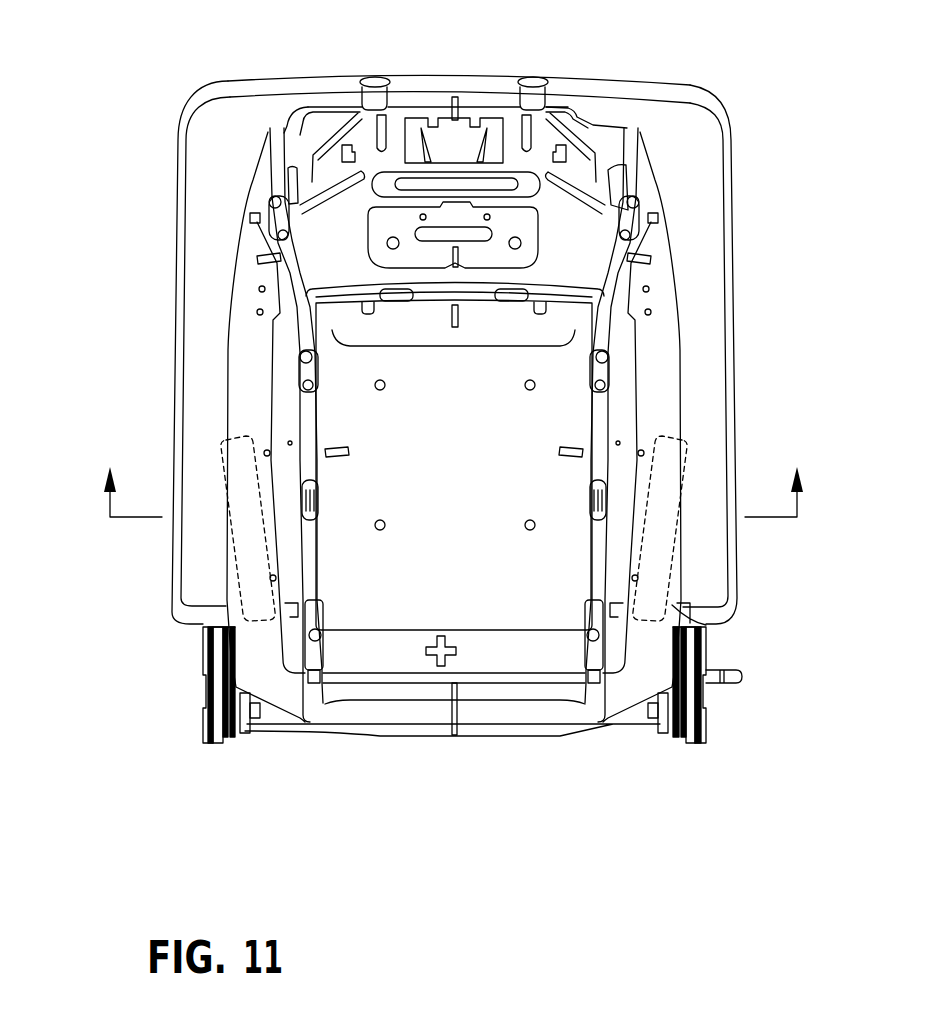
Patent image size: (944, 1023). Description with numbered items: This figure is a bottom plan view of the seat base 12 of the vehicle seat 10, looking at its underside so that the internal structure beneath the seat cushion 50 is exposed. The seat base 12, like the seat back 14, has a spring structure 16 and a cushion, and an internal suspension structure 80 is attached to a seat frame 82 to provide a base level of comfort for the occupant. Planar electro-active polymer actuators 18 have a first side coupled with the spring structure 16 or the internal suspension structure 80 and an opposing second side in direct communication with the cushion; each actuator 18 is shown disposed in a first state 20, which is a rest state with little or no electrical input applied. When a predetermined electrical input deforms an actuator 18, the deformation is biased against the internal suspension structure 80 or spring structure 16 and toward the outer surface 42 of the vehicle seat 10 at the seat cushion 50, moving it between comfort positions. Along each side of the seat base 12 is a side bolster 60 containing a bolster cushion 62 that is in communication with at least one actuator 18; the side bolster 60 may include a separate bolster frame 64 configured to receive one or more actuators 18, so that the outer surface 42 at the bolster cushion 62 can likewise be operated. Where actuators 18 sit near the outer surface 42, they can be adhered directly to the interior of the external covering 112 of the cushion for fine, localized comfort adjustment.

The vehicle seat 10 is at (790, 146).
The seat base 12 is at (178, 187).
The external covering 112 is at (228, 93).
The outer surface 42 is at (310, 87).
The seat cushion 50 is at (557, 78).
The seat frame 82 is at (567, 200).
The internal suspension structure 80 is at (300, 360).
The spring structure 16 is at (610, 375).
The side bolster 60 is at (198, 427).
The bolster cushion 62 is at (707, 448).
The first state 20 is at (222, 547).
The planar electro-active polymer actuator 18 is at (660, 538).
The bolster frame 64 is at (715, 624).
The seat back 14 is at (558, 735).